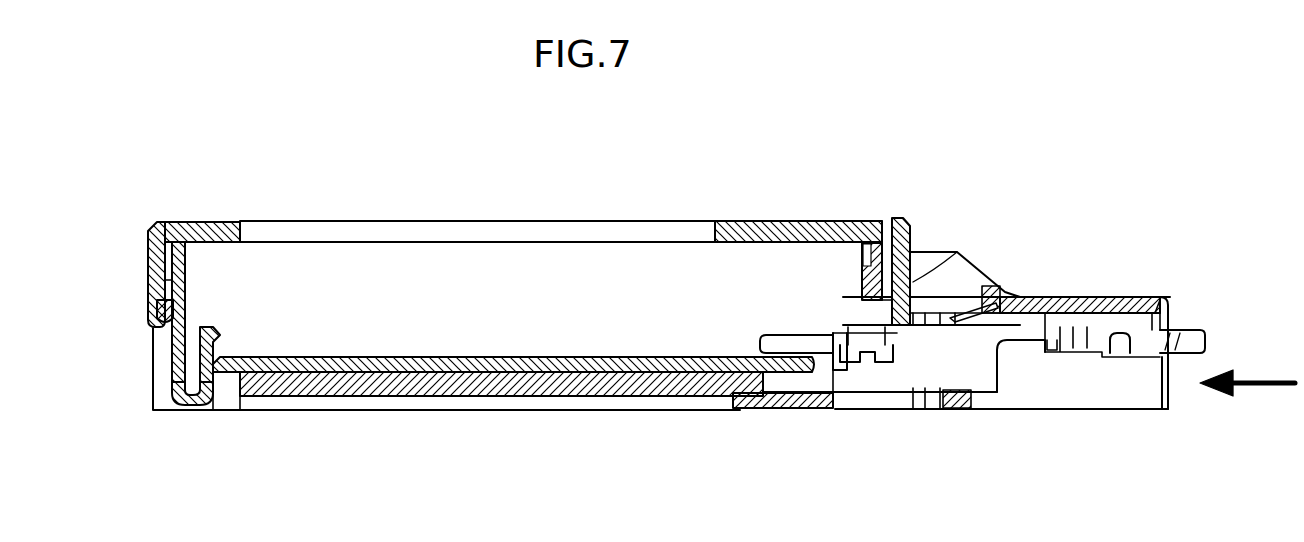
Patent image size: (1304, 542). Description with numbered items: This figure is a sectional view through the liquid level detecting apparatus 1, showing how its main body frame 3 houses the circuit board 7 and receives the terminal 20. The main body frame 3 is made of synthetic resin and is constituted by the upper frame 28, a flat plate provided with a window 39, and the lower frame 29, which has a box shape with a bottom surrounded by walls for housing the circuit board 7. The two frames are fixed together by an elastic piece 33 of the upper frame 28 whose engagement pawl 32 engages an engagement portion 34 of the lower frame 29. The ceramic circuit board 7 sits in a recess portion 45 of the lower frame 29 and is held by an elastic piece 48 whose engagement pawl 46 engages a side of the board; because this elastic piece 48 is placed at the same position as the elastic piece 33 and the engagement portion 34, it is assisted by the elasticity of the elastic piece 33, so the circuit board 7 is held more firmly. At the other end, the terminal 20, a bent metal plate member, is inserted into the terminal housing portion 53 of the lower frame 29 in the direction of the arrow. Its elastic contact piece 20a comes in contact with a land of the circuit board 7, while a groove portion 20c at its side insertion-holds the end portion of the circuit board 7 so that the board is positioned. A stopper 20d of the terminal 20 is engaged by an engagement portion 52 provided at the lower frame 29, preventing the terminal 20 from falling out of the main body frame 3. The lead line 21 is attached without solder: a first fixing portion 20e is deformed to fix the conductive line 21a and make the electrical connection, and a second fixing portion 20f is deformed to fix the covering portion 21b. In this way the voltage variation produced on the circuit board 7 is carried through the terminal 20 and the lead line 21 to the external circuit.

The liquid level detecting apparatus 1 is at (382, 205).
The main body frame 3 is at (925, 245).
The circuit board 7 is at (415, 357).
The terminal 20 is at (843, 377).
The contact piece 20a is at (842, 340).
The groove portion 20c is at (773, 378).
The stopper 20d is at (963, 297).
The first fixing portion 20e is at (1090, 357).
The second fixing portion 20f is at (1147, 347).
The lead line 21 is at (1187, 327).
The conductive line 21a is at (1090, 277).
The covering portion 21b is at (1177, 327).
The upper frame 28 is at (183, 220).
The lower frame 29 is at (365, 397).
The engagement pawl 32 is at (150, 305).
The elastic piece 33 is at (148, 280).
The engagement portion 34 is at (187, 288).
The window 39 is at (700, 221).
The recess portion 45 is at (468, 372).
The engagement pawl 46 is at (205, 337).
The elastic piece 48 is at (170, 397).
The engagement portion 52 is at (1000, 298).
The terminal housing portion 53 is at (1032, 372).